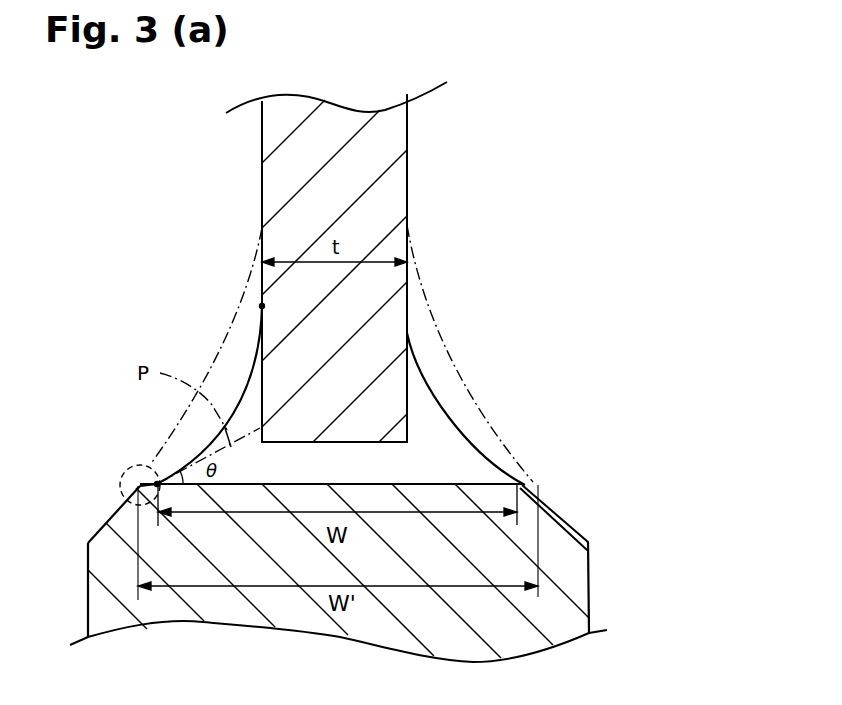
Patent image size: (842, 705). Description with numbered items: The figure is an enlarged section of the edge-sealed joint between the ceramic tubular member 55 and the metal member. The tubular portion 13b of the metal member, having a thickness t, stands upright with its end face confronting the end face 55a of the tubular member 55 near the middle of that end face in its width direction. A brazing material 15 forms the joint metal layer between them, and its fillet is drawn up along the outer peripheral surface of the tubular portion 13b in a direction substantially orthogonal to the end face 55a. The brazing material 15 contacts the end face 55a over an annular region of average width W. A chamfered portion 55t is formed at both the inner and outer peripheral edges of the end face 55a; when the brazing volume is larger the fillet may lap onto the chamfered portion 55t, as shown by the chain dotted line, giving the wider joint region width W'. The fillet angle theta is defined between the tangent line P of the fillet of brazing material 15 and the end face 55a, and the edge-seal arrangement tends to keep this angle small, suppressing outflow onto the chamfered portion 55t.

The tubular portion 13b is at (370, 147).
The brazing material 15 is at (422, 388).
The end face 55a is at (483, 482).
The chamfered portion 55t is at (120, 506).
The tubular member 55 is at (577, 585).